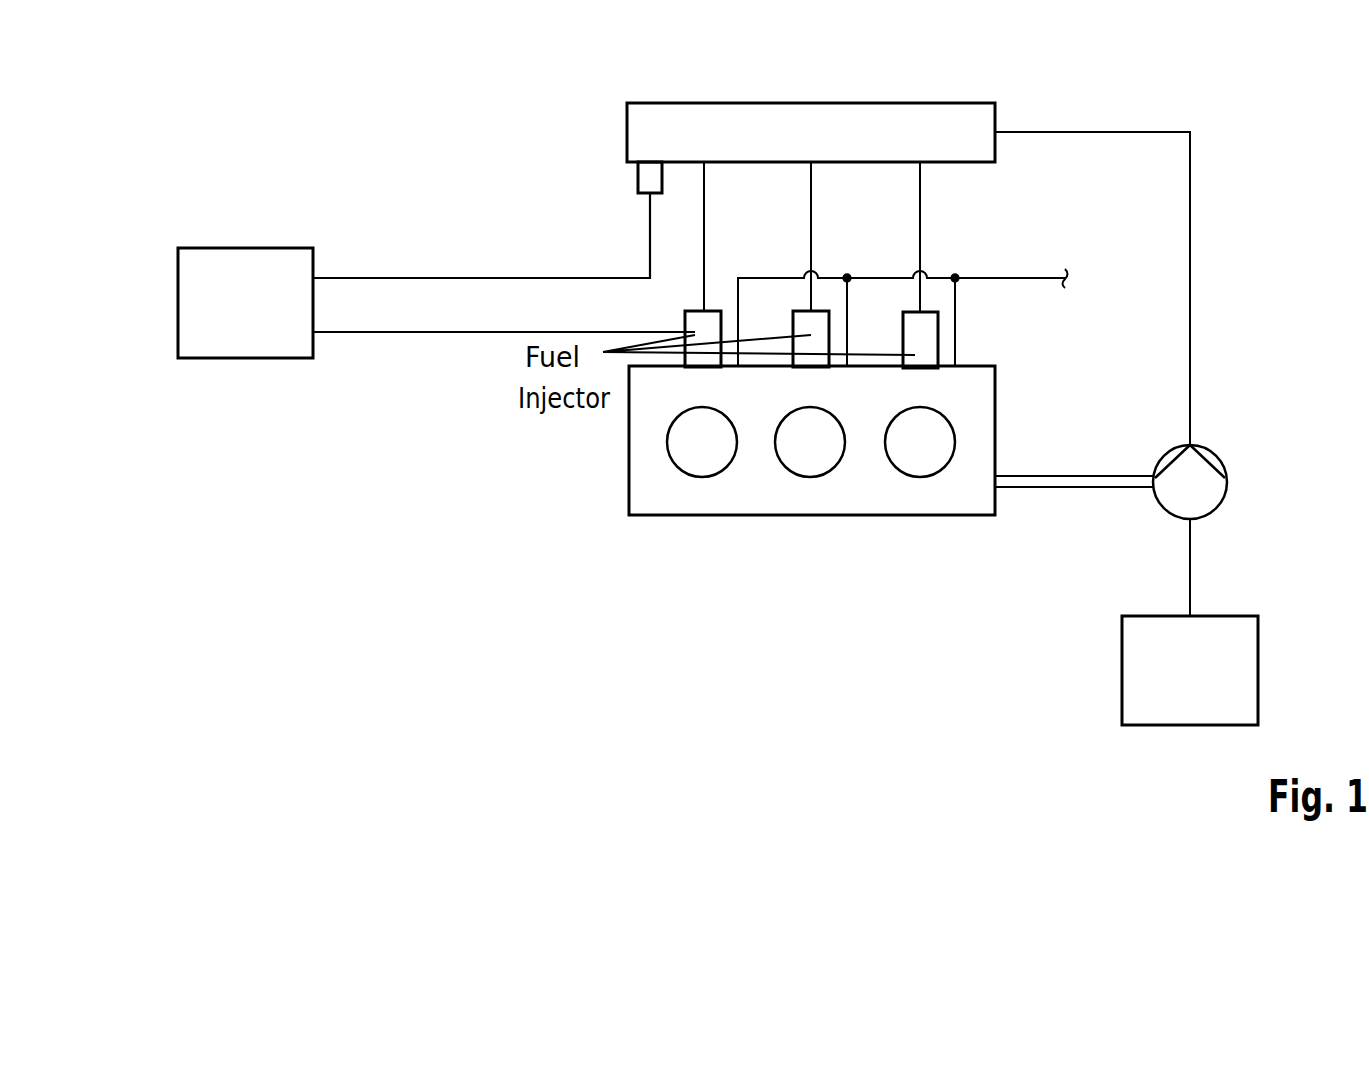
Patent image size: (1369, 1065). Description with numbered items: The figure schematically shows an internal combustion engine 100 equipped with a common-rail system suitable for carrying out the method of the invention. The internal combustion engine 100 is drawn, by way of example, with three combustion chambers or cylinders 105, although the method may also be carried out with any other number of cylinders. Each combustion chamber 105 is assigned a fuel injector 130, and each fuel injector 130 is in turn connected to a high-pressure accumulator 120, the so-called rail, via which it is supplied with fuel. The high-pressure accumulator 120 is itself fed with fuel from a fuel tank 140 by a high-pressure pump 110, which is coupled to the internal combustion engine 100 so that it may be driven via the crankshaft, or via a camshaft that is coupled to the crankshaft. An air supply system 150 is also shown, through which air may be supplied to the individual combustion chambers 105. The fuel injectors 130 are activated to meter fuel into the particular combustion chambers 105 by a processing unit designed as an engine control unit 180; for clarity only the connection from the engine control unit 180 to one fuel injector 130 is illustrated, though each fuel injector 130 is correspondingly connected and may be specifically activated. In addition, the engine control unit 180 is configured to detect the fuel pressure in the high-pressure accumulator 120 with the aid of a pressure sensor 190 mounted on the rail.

The internal combustion engine 100 is at (629, 455).
The combustion chamber 105 is at (700, 477).
The high-pressure pump 110 is at (1227, 480).
The high-pressure accumulator 120 is at (840, 103).
The fuel injector 130 is at (938, 347).
The fuel tank 140 is at (1258, 668).
The air supply system 150 is at (1034, 278).
The engine control unit 180 is at (251, 248).
The pressure sensor 190 is at (636, 180).